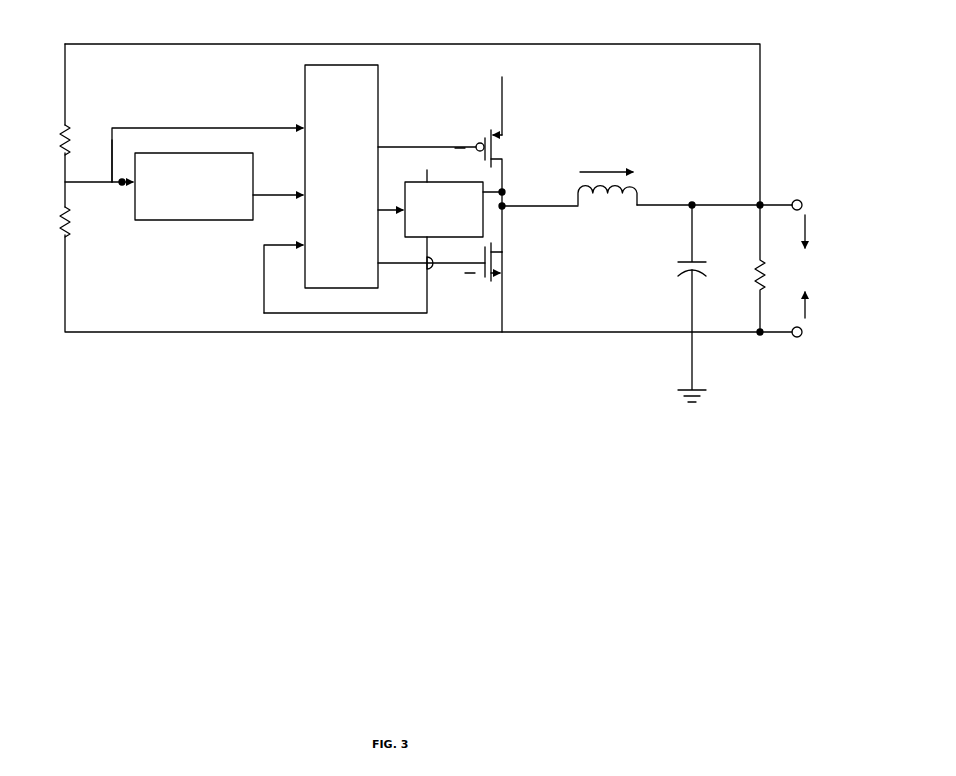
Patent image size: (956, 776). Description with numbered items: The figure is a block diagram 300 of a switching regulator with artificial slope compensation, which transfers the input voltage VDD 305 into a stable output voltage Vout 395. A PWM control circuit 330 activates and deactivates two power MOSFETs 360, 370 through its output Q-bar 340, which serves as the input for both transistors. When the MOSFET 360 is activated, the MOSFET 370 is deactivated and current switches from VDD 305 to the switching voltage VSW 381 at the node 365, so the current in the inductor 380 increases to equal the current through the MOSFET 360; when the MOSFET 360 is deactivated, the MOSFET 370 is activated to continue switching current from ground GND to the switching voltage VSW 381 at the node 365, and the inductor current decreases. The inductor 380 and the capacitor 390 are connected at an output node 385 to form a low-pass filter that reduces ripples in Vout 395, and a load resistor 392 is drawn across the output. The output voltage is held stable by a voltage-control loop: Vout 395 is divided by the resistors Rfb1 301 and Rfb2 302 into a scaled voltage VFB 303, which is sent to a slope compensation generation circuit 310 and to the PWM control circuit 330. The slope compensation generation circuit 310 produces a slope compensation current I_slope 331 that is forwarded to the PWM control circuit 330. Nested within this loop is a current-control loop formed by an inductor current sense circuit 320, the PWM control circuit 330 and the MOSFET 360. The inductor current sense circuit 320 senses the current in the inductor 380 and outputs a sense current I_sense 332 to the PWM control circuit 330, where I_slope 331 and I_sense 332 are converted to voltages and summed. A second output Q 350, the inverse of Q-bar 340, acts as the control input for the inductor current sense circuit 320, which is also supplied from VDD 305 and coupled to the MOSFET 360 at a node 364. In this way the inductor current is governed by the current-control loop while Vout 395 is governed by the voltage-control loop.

The block diagram 300 is at (101, 23).
The resistor Rfb1 301 is at (60, 137).
The resistor Rfb2 302 is at (58, 222).
The scaled voltage VFB 303 is at (110, 132).
The input voltage VDD 305 is at (503, 98).
The slope compensation generation circuit 310 is at (184, 208).
The inductor current sense circuit 320 is at (434, 232).
The PWM control circuit 330 is at (331, 203).
The slope compensation current I_slope 331 is at (263, 200).
The sense current I_sense 332 is at (262, 290).
The output Q-bar 340 is at (400, 140).
The output Q 350 is at (387, 212).
The power MOSFET 360 is at (497, 153).
The node 364 is at (505, 187).
The node 365 is at (502, 214).
The power MOSFET 370 is at (508, 270).
The inductor 380 is at (610, 195).
The switching voltage VSW 381 is at (545, 206).
The output node 385 is at (692, 200).
The capacitor 390 is at (683, 260).
The load resistor 392 is at (748, 262).
The output voltage Vout 395 is at (783, 212).